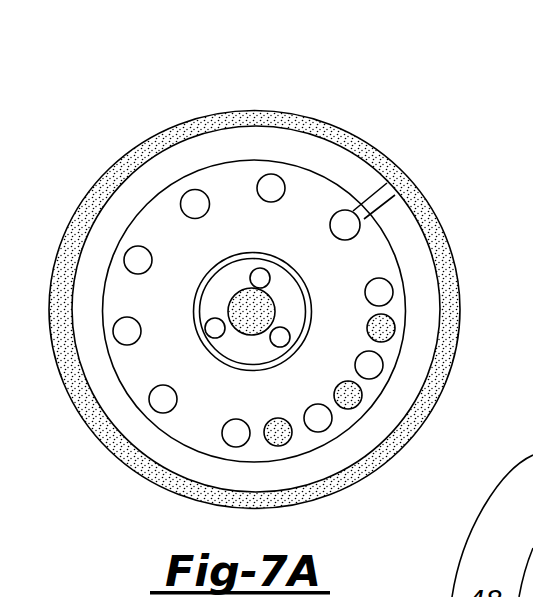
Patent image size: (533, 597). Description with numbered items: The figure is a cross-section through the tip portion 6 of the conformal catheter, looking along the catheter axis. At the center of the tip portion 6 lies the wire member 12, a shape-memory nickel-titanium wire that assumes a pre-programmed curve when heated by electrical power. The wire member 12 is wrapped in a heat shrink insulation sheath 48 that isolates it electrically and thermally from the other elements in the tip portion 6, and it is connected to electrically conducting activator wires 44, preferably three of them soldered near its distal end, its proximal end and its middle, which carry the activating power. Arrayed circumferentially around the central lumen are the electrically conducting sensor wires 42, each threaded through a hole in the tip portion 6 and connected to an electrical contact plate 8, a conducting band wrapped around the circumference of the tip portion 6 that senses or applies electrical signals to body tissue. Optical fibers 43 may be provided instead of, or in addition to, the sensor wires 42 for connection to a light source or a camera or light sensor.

The tip portion 6 is at (157, 106).
The electrical contact plate 8 is at (461, 306).
The wire member 12 is at (272, 311).
The sensor wire 42 is at (330, 227).
The optical fiber 43 is at (392, 335).
The activator wire 44 is at (259, 276).
The insulation sheath 48 is at (309, 310).